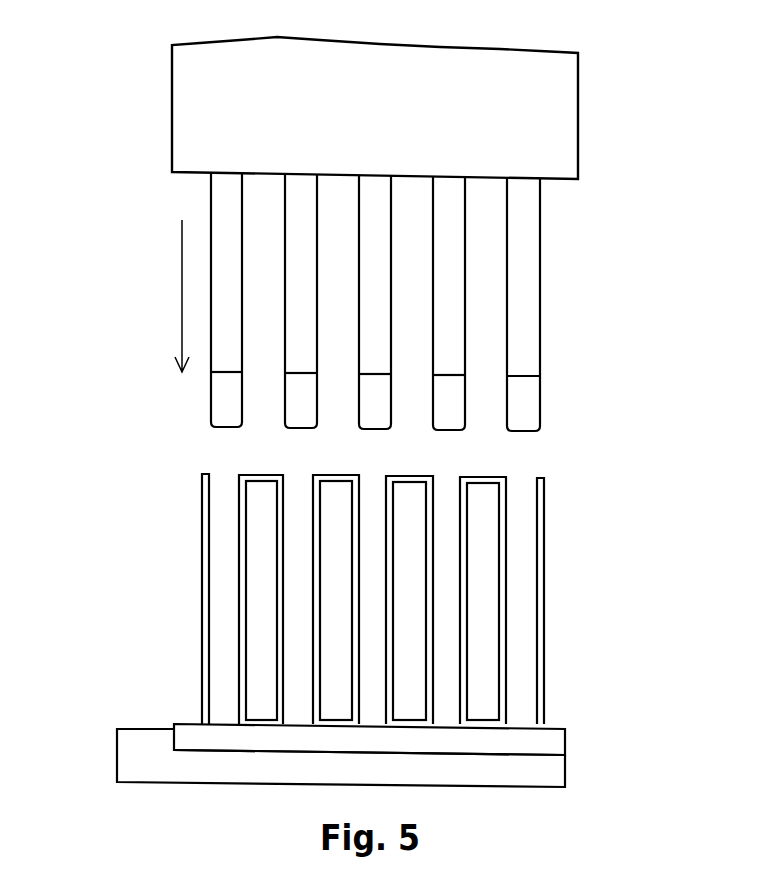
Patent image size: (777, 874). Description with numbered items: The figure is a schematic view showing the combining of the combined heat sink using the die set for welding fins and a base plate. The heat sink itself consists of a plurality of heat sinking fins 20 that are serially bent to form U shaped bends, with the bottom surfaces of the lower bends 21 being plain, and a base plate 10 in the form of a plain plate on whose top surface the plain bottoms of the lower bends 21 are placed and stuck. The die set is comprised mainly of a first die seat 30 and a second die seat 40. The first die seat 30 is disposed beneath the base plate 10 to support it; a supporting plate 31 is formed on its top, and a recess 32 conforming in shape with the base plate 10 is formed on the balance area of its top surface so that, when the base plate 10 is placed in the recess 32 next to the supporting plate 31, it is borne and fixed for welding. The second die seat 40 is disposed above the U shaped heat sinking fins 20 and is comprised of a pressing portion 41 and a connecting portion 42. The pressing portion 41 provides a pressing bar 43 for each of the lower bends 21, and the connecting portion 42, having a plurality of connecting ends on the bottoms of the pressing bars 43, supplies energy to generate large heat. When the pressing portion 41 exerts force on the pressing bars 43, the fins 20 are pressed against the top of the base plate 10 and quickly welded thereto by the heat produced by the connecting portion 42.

The second die seat 40 is at (421, 234).
The pressing portion 41 is at (195, 108).
The connecting portion 42 is at (527, 394).
The pressing bar 43 is at (530, 278).
The heat sinking fins 20 is at (334, 599).
The lower bends 21 is at (232, 720).
The base plate 10 is at (575, 736).
The first die seat 30 is at (165, 767).
The supporting plate 31 is at (138, 730).
The recess 32 is at (525, 757).